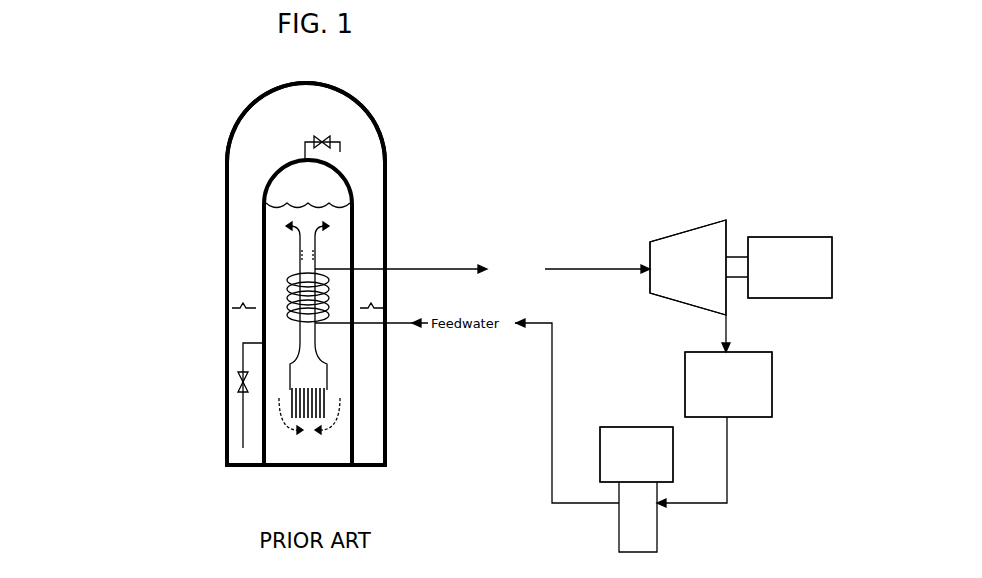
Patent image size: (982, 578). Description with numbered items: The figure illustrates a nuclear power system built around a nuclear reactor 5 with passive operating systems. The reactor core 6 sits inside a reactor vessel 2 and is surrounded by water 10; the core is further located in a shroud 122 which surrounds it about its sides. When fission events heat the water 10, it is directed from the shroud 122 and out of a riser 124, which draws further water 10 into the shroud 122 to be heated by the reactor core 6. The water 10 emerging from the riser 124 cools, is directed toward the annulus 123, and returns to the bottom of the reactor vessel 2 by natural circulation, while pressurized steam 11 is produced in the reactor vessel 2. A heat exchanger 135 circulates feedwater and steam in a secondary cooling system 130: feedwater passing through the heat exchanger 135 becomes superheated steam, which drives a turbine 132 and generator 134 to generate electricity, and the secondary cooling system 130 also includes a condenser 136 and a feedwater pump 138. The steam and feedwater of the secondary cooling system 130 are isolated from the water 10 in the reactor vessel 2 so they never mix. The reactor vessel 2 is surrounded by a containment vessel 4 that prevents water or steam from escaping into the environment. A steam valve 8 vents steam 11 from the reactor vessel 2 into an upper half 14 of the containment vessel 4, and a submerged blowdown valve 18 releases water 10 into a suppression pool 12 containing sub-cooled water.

The reactor vessel 2 is at (357, 217).
The containment vessel 4 is at (393, 167).
The nuclear reactor 5 is at (205, 165).
The reactor core 6 is at (340, 397).
The steam valve 8 is at (325, 137).
The water 10 is at (278, 247).
The pressurized steam 11 is at (297, 182).
The suppression pool 12 is at (372, 437).
The upper half of the containment vessel 14 is at (289, 136).
The submerged blowdown valve 18 is at (225, 373).
The shroud 122 is at (333, 373).
The annulus 123 is at (322, 349).
The riser 124 is at (327, 253).
The secondary cooling system 130 is at (681, 207).
The turbine 132 is at (675, 275).
The generator 134 is at (780, 275).
The heat exchanger 135 is at (280, 290).
The condenser 136 is at (715, 396).
The feedwater pump 138 is at (624, 460).